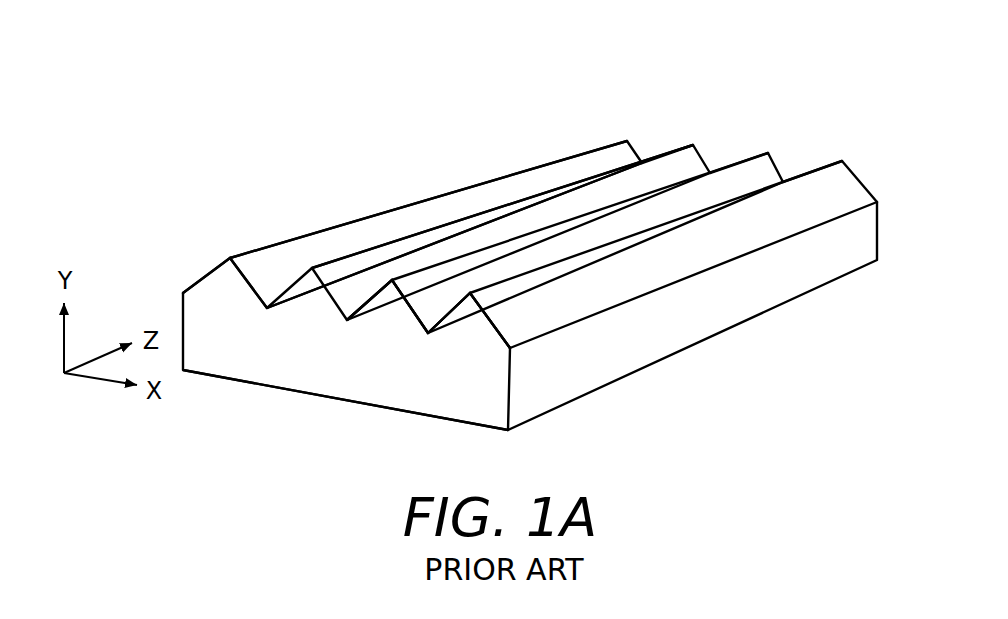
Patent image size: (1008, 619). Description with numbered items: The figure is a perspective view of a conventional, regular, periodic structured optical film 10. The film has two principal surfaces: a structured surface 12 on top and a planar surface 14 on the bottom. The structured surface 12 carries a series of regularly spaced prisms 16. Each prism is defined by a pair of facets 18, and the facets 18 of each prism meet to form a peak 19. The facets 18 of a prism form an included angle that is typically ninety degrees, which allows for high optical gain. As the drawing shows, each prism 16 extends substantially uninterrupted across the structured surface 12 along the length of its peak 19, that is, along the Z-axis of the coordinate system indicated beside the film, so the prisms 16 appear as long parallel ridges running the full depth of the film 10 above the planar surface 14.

The structured optical film 10 is at (732, 87).
The structured surface 12 is at (230, 258).
The planar surface 14 is at (305, 395).
The prisms 16 is at (467, 310).
The facets 18 is at (410, 312).
The peaks 19 is at (540, 232).